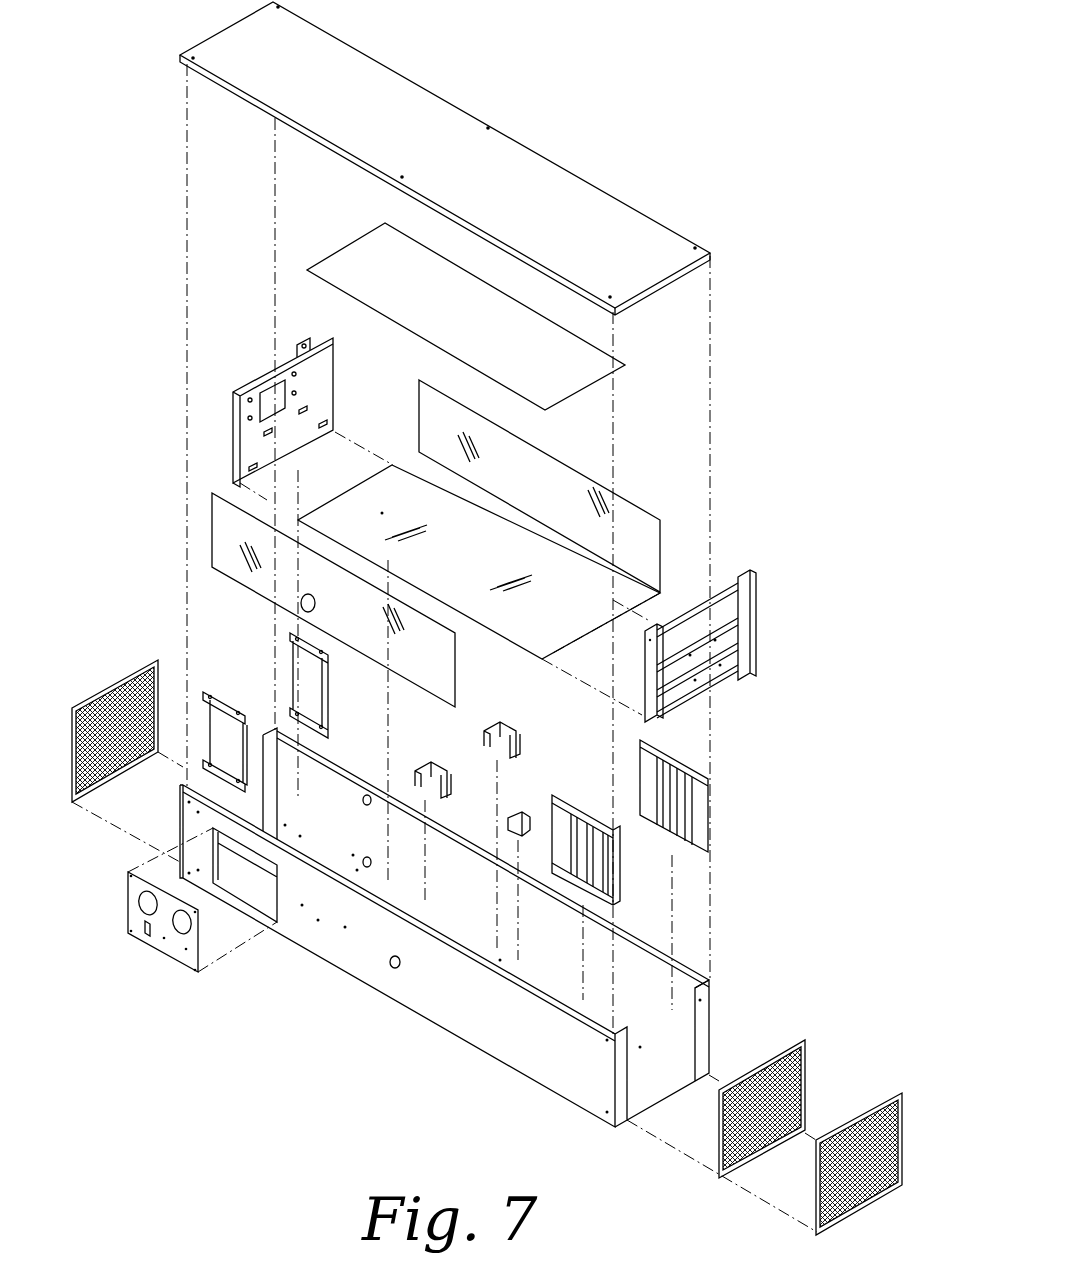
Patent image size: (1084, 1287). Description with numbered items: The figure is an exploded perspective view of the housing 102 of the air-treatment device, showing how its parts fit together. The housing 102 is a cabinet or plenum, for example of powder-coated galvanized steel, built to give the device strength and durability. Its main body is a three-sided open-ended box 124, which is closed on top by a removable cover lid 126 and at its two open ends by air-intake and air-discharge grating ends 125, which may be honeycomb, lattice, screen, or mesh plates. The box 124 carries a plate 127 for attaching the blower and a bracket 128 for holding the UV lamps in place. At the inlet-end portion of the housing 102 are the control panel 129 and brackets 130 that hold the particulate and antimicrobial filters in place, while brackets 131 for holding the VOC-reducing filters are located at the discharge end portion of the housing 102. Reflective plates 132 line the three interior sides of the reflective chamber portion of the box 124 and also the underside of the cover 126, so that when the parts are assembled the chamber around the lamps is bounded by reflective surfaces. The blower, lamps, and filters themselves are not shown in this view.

The housing 102 is at (876, 93).
The three-sided open-ended box 124 is at (440, 1031).
The air-intake and air-discharge grating ends 125 is at (114, 683).
The removable cover lid 126 is at (569, 169).
The plate 127 is at (258, 376).
The bracket 128 is at (753, 620).
The control panel 129 is at (150, 949).
The brackets 130 is at (228, 699).
The brackets 131 is at (576, 797).
The reflective plates 132 is at (644, 501).